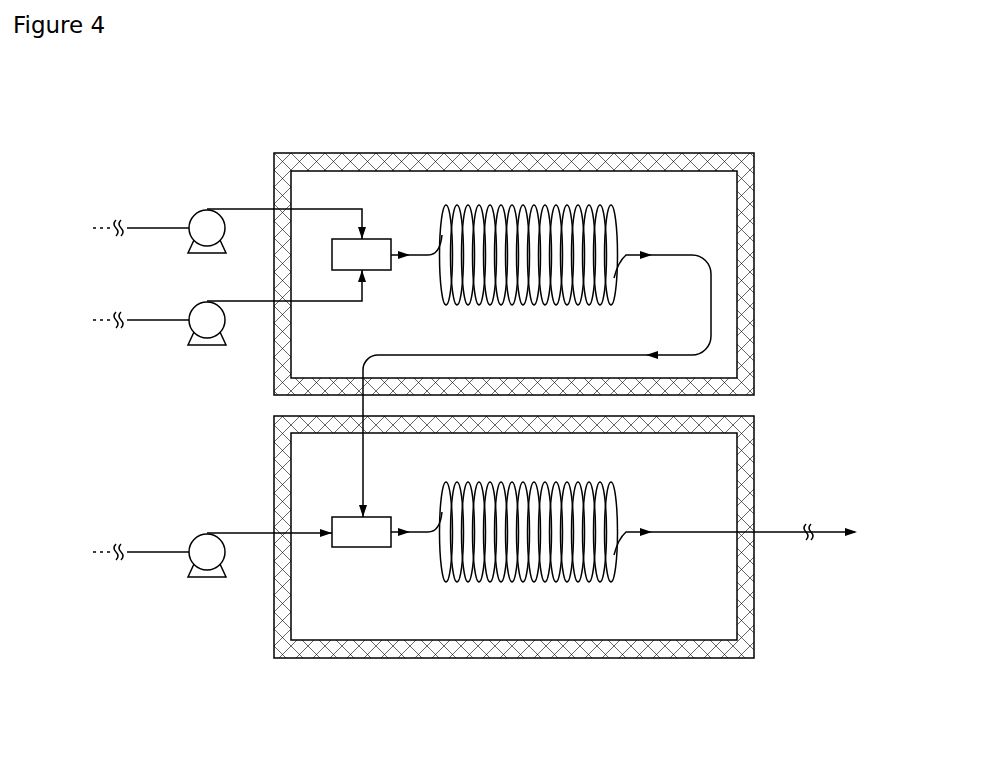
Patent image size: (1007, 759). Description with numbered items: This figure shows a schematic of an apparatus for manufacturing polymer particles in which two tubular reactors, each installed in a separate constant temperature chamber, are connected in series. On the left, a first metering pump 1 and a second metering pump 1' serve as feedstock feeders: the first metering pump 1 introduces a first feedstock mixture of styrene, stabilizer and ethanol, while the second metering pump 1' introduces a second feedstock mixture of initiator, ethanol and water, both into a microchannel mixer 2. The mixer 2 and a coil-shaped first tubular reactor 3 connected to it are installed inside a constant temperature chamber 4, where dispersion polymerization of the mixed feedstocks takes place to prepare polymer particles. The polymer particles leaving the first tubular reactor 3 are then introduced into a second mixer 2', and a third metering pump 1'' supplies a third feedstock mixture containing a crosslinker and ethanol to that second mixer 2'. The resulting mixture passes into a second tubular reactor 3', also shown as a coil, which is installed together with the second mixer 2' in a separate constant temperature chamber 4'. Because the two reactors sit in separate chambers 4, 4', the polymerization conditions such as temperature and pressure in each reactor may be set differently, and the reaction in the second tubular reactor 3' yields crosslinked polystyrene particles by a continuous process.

The first metering pump 1 is at (229, 187).
The second metering pump 1' is at (229, 338).
The third metering pump 1'' is at (212, 585).
The mixer 2 is at (375, 172).
The second mixer 2' is at (371, 618).
The first tubular reactor 3 is at (535, 299).
The second tubular reactor 3' is at (633, 600).
The constant temperature chamber 4 is at (536, 251).
The constant temperature chamber 4' is at (542, 523).